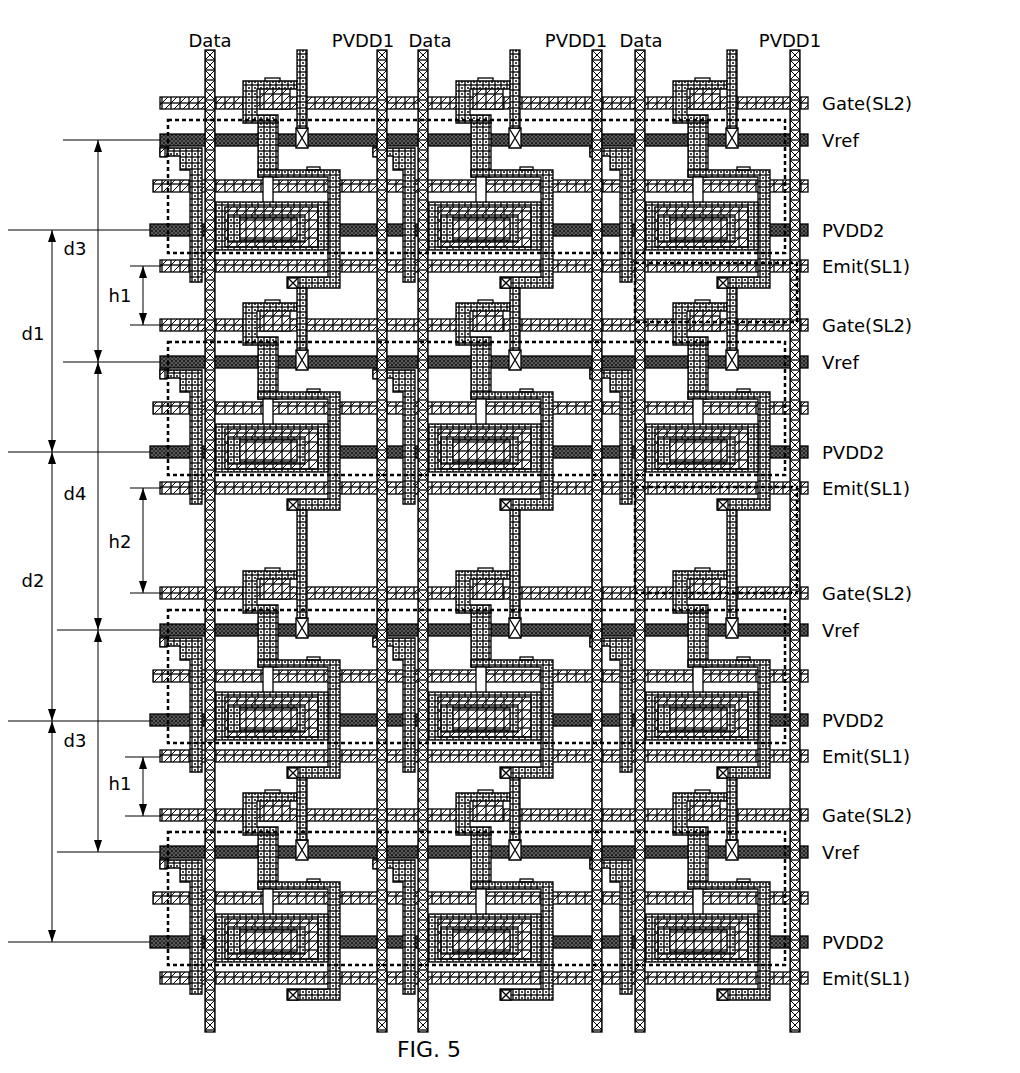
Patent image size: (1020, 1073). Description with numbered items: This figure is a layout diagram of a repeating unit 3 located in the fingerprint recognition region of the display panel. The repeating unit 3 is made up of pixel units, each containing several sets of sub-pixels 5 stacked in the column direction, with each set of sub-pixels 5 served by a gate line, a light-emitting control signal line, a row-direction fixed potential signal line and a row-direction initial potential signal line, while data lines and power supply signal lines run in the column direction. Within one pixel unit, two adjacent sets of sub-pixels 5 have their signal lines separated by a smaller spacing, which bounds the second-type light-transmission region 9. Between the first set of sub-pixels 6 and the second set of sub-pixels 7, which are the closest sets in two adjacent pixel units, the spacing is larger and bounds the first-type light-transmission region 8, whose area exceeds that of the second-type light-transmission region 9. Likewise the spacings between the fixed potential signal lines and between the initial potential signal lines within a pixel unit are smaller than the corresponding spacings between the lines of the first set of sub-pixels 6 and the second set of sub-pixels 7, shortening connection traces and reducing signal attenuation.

The repeating unit 3 is at (81, 60).
The set of sub-pixels 5 is at (786, 176).
The first set of sub-pixels 6 is at (790, 407).
The second set of sub-pixels 7 is at (790, 894).
The first-type light-transmission region 8 is at (798, 541).
The second-type light-transmission region 9 is at (798, 302).